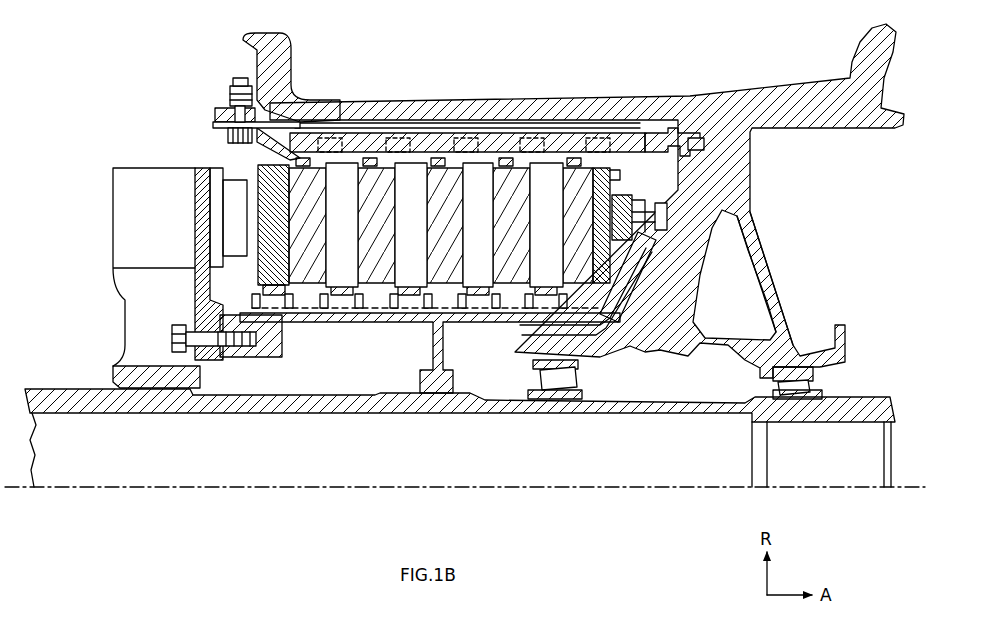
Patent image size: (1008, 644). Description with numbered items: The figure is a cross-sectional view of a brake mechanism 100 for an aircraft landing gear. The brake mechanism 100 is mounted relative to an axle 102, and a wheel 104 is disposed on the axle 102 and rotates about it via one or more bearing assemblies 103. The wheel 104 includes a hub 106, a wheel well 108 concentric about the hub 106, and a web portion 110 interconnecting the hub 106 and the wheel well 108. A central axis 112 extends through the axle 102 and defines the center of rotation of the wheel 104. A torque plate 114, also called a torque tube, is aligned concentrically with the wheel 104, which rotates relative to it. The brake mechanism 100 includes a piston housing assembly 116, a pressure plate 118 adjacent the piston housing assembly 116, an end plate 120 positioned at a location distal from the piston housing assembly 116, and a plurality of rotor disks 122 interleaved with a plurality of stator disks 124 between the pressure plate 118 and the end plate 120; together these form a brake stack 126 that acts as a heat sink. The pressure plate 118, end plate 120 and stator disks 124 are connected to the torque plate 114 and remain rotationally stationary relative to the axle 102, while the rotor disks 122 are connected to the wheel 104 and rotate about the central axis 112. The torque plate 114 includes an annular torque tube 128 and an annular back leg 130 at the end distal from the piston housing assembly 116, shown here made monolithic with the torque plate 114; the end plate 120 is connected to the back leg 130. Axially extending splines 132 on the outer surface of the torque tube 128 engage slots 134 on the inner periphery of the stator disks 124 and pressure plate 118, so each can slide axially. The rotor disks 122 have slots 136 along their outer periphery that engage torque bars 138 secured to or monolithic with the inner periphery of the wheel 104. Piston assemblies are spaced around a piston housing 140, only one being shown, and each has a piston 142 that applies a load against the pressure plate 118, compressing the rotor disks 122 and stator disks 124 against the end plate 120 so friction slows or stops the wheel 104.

The brake mechanism 100 is at (118, 78).
The axle 102 is at (660, 410).
The bearing assemblies 103 is at (802, 388).
The wheel 104 is at (768, 207).
The hub 106 is at (644, 352).
The wheel well 108 is at (676, 102).
The web portion 110 is at (770, 262).
The central axis 112 is at (628, 489).
The torque plate 114 is at (327, 326).
The piston housing assembly 116 is at (178, 154).
The pressure plate 118 is at (258, 168).
The end plate 120 is at (612, 180).
The rotor disks 122 is at (310, 176).
The stator disks 124 is at (408, 170).
The brake stack 126 is at (518, 176).
The torque tube 128 is at (297, 320).
The back leg 130 is at (622, 268).
The splines 132 is at (374, 308).
The slots 134 is at (520, 308).
The slots 136 is at (360, 150).
The torque bars 138 is at (616, 148).
The piston housing 140 is at (113, 171).
The piston 142 is at (252, 204).